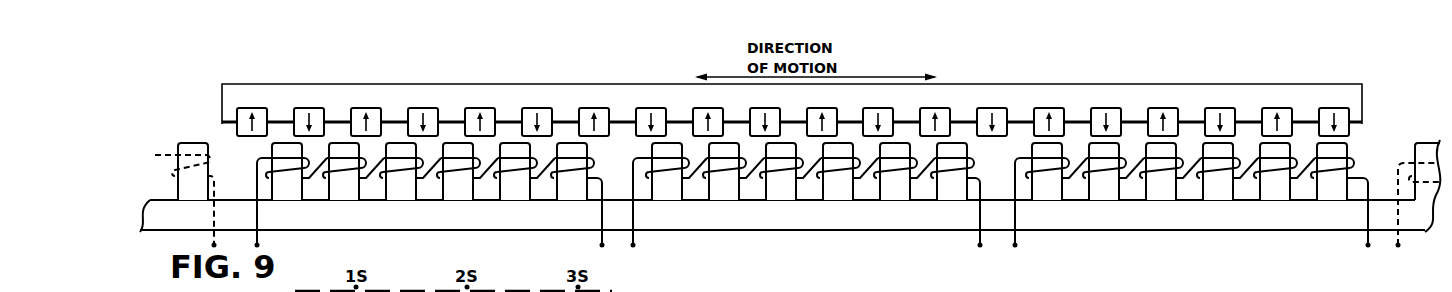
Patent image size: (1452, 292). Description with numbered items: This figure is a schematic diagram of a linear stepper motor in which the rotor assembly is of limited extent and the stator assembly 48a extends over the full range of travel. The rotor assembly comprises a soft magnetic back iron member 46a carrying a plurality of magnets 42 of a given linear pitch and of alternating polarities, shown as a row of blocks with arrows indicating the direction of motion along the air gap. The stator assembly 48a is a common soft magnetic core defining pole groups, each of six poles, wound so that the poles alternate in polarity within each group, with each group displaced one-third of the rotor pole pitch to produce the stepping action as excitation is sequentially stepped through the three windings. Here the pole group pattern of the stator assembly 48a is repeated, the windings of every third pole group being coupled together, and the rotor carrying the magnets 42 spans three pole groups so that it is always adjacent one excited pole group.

The magnets 42 is at (476, 106).
The soft magnetic back iron member 46a is at (557, 104).
The stator assembly 48a is at (783, 213).